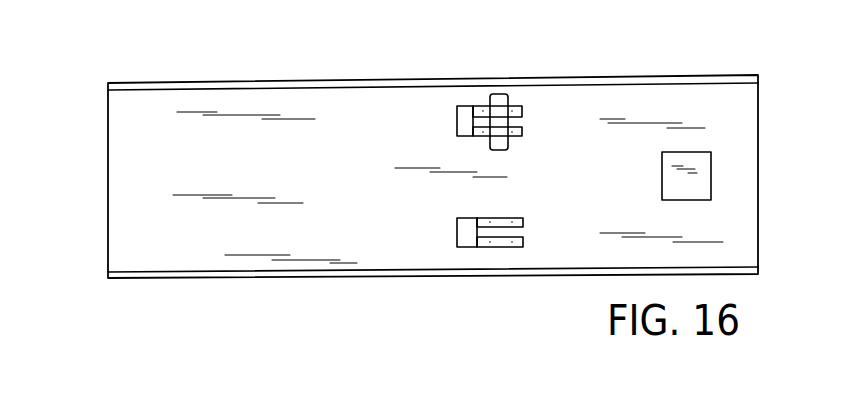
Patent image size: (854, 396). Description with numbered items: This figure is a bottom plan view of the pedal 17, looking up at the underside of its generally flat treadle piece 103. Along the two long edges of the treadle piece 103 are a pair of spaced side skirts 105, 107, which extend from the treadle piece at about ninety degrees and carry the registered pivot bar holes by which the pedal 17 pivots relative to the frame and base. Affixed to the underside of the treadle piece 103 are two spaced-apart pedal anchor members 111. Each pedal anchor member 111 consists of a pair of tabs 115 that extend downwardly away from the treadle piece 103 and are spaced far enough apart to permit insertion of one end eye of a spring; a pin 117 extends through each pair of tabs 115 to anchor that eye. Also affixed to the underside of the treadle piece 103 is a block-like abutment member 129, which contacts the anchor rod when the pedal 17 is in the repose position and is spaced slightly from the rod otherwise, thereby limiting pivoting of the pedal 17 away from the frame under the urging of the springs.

The pedal 17 is at (273, 54).
The treadle piece 103 is at (118, 179).
The side skirt 105 is at (318, 81).
The side skirt 107 is at (228, 280).
The pedal anchor member 111 is at (485, 132).
The tab 115 is at (525, 106).
The pin 117 is at (500, 93).
The abutment member 129 is at (662, 188).